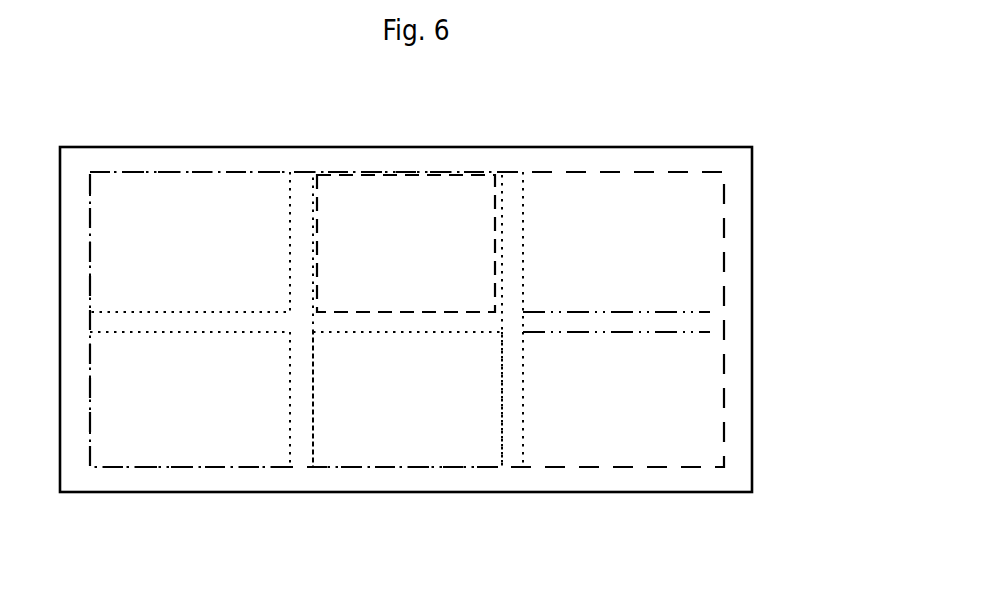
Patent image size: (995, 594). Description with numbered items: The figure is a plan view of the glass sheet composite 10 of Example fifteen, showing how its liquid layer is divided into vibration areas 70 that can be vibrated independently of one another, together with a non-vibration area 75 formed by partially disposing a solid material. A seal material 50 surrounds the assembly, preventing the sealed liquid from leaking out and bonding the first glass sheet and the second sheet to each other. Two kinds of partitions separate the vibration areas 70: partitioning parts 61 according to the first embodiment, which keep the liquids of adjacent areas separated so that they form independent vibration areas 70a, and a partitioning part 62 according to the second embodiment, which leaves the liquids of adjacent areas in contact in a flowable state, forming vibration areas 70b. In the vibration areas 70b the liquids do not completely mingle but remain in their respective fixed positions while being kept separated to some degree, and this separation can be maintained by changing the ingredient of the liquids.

The glass sheet composite 10 is at (383, 147).
The seal material 50 is at (733, 460).
The partitioning parts 61 is at (297, 207).
The partitioning part 62 is at (683, 322).
The vibration areas 70 is at (145, 200).
The independent vibration areas 70a is at (195, 435).
The vibration areas in which the liquids are flowable 70b is at (652, 185).
The non-vibration area 75 is at (457, 207).